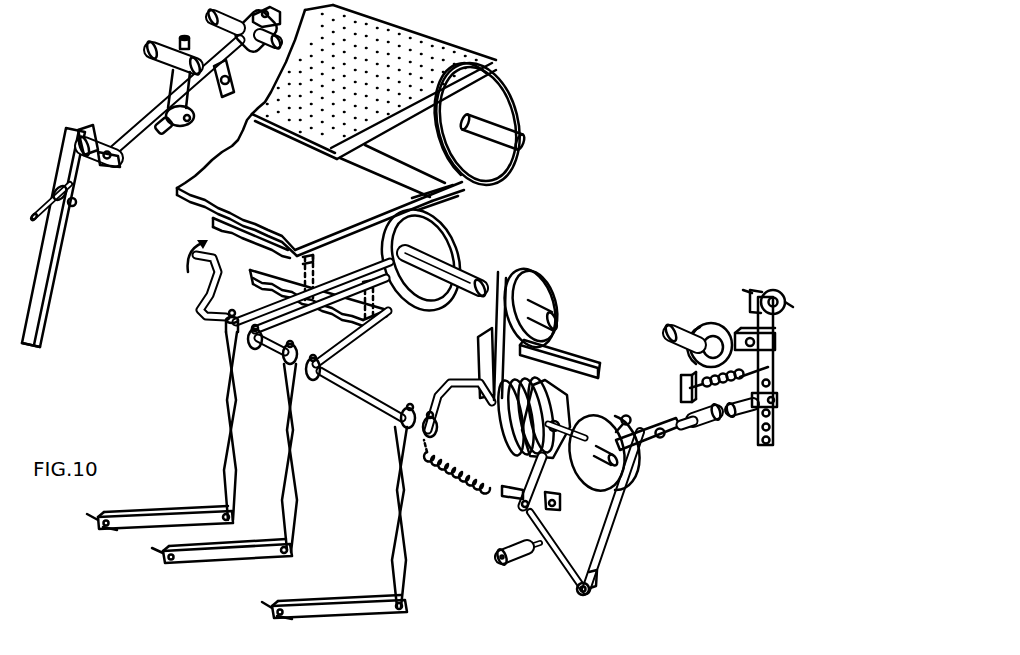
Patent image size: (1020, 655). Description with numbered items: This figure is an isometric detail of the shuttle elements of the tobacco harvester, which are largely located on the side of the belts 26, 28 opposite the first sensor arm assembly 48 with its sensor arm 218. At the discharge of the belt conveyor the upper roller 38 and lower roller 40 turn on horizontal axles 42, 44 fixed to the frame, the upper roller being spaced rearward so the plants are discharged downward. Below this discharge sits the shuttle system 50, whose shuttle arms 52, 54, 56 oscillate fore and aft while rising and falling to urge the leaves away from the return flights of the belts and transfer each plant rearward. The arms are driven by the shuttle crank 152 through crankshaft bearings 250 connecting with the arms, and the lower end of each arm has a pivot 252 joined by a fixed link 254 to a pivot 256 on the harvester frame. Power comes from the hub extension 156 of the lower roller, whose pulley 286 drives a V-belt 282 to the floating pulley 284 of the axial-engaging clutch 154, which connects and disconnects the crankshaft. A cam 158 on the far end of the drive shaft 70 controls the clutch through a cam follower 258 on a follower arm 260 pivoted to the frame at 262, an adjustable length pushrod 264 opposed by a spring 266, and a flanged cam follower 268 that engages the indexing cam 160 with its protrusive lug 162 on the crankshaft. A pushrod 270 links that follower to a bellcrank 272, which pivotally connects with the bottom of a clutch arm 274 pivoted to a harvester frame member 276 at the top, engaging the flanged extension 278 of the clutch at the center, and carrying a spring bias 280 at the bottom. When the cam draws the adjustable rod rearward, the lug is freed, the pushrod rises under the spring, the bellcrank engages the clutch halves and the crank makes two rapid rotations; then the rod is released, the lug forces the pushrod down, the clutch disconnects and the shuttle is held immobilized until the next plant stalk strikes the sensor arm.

The belt 26 is at (385, 131).
The belt 28 is at (445, 208).
The upper roller 38 is at (500, 72).
The lower roller 40 is at (452, 230).
The horizontal axle 42 is at (524, 130).
The horizontal axle 44 is at (544, 291).
The first sensor arm assembly 48 is at (56, 304).
The shuttle system 50 is at (266, 301).
The shuttle arm 52 is at (273, 323).
The shuttle arm 54 is at (352, 345).
The shuttle arm 56 is at (480, 362).
The drive shaft 70 is at (668, 338).
The shuttle crank 152 is at (387, 407).
The clutch 154 is at (503, 462).
The hub extension 156 is at (486, 277).
The cam 158 is at (697, 335).
The cam 160 is at (600, 476).
The protrusive lug 162 is at (628, 414).
The sensor arm 218 is at (36, 340).
The crankshaft bearing 250 is at (222, 333).
The pivot 252 is at (292, 550).
The fixed link 254 is at (227, 557).
The pivot 256 is at (177, 553).
The cam follower 258 is at (740, 333).
The follower arm 260 is at (763, 447).
The pivot 262 is at (780, 290).
The adjustable length pushrod 264 is at (730, 420).
The spring 266 is at (683, 372).
The flanged cam follower 268 is at (630, 447).
The pushrod 270 is at (605, 530).
The bellcrank 272 is at (550, 573).
The clutch arm 274 is at (540, 487).
The harvester frame member 276 is at (554, 352).
The flanged extension 278 is at (533, 417).
The spring bias 280 is at (480, 486).
The V-belt 282 is at (493, 308).
The floating pulley 284 is at (497, 428).
The pulley 286 is at (577, 252).